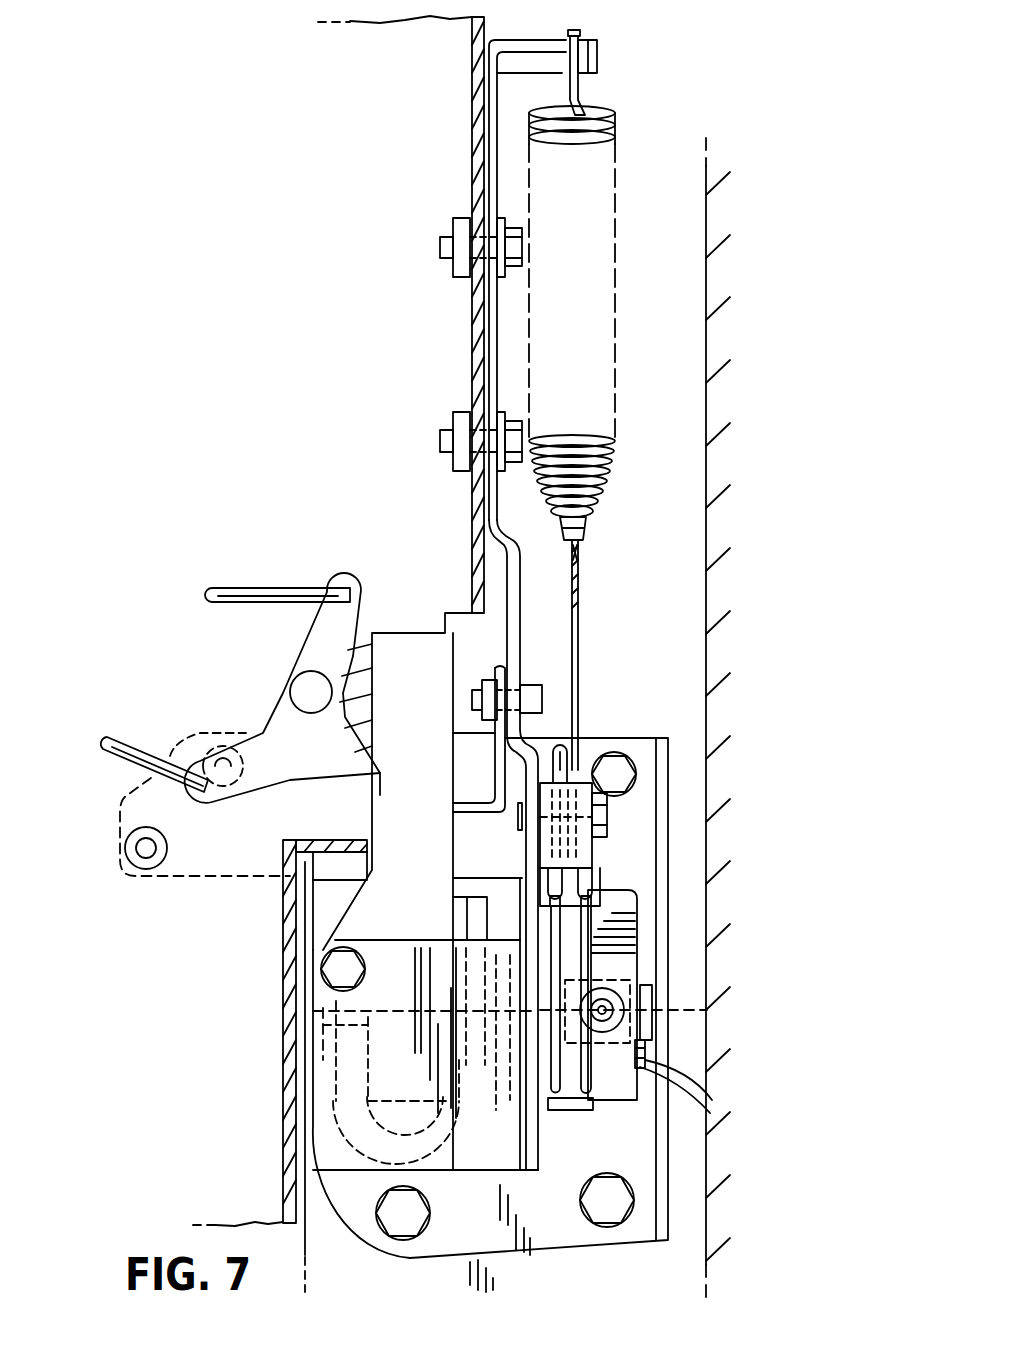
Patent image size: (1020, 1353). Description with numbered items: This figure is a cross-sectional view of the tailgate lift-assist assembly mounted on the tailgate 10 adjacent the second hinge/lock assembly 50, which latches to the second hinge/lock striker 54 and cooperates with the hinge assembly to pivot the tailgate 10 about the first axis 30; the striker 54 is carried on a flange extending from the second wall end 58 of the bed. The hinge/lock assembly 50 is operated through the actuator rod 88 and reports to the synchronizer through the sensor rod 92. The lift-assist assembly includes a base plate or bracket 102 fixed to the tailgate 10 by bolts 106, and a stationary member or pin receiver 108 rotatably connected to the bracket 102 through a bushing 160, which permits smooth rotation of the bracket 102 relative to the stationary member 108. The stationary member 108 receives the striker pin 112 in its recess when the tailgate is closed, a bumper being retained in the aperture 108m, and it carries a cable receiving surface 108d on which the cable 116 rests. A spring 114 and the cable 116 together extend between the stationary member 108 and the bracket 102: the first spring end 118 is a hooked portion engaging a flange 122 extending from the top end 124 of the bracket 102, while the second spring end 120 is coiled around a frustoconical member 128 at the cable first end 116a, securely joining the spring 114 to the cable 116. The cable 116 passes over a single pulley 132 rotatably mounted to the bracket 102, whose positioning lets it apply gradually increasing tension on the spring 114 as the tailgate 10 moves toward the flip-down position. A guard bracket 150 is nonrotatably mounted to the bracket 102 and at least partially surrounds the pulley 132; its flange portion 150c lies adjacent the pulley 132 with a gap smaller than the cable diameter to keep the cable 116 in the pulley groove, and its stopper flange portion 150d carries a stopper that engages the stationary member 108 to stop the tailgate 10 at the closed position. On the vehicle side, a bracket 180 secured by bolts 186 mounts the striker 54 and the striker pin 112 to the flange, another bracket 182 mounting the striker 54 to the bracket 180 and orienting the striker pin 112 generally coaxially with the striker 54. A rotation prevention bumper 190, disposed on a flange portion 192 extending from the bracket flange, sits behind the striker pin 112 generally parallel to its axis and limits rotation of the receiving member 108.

The tailgate 10 is at (299, 1192).
The first axis 30 is at (423, 1082).
The second hinge/lock assembly 50 is at (451, 877).
The second hinge/lock striker 54 is at (455, 968).
The second wall end 58 is at (708, 560).
The actuator rod 88 is at (248, 592).
The sensor rod 92 is at (122, 743).
The base plate or bracket 102 is at (502, 321).
The bolts 106 is at (512, 241).
The stationary member or pin receiver 108 is at (644, 908).
The cable receiving surface 108d is at (606, 950).
The aperture 108m is at (606, 1008).
The striker pin 112 is at (648, 986).
The spring 114 is at (616, 143).
The cable 116 is at (580, 656).
The cable first end 116a is at (582, 562).
The first spring end 118 is at (576, 33).
The second spring end 120 is at (604, 506).
The flange 122 is at (599, 54).
The top end of the bracket 124 is at (490, 78).
The frustoconical member 128 is at (590, 528).
The pulley 132 is at (585, 757).
The guard bracket 150 is at (594, 849).
The flange portion 150c is at (608, 806).
The stopper flange portion 150d is at (592, 882).
The bushing 160 is at (536, 1066).
The bracket 180 is at (672, 1163).
The bracket 182 is at (330, 900).
The bolts 186 is at (628, 773).
The rotation prevention bumper 190 is at (652, 1060).
The flange portion 192 is at (650, 1050).